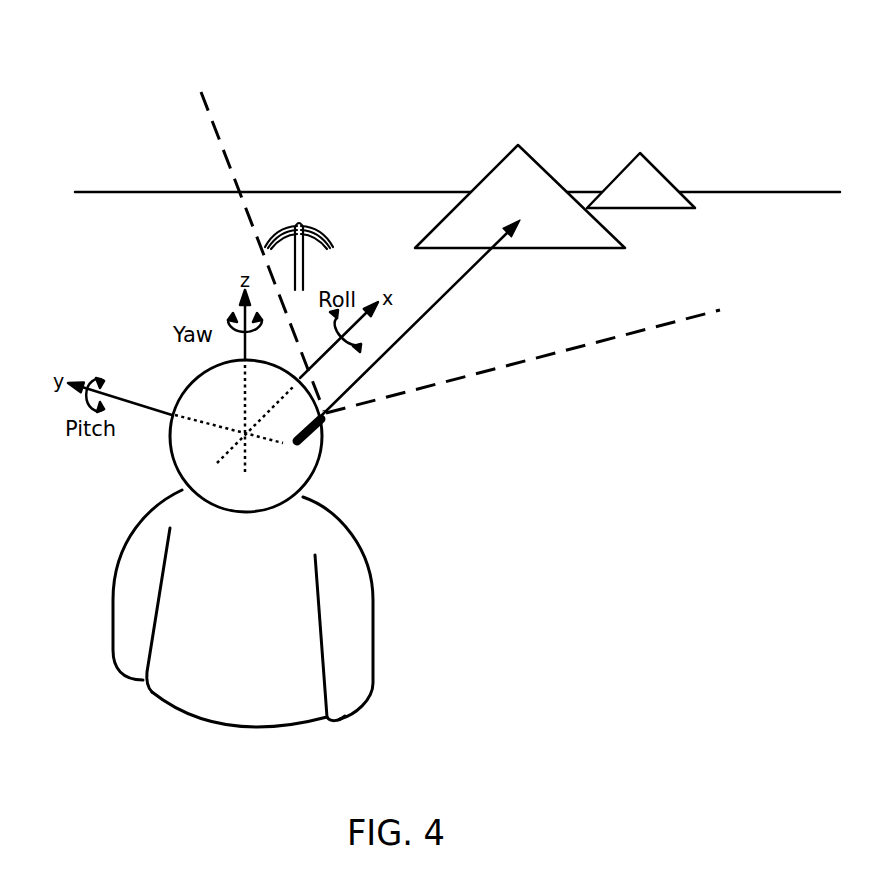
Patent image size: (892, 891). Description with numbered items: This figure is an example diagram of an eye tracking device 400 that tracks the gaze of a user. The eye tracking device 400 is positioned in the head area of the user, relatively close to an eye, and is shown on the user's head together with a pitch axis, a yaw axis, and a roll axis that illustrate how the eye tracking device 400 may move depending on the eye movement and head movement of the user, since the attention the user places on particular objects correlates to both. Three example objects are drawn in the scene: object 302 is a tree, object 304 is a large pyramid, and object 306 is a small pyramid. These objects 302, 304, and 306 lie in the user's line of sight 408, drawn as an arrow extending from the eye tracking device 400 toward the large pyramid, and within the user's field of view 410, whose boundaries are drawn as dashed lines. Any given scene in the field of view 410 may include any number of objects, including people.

The object 302 is at (307, 226).
The object 304 is at (542, 162).
The object 306 is at (667, 178).
The eye tracking device 400 is at (325, 420).
The line of sight 408 is at (455, 288).
The field of view 410 is at (198, 92).